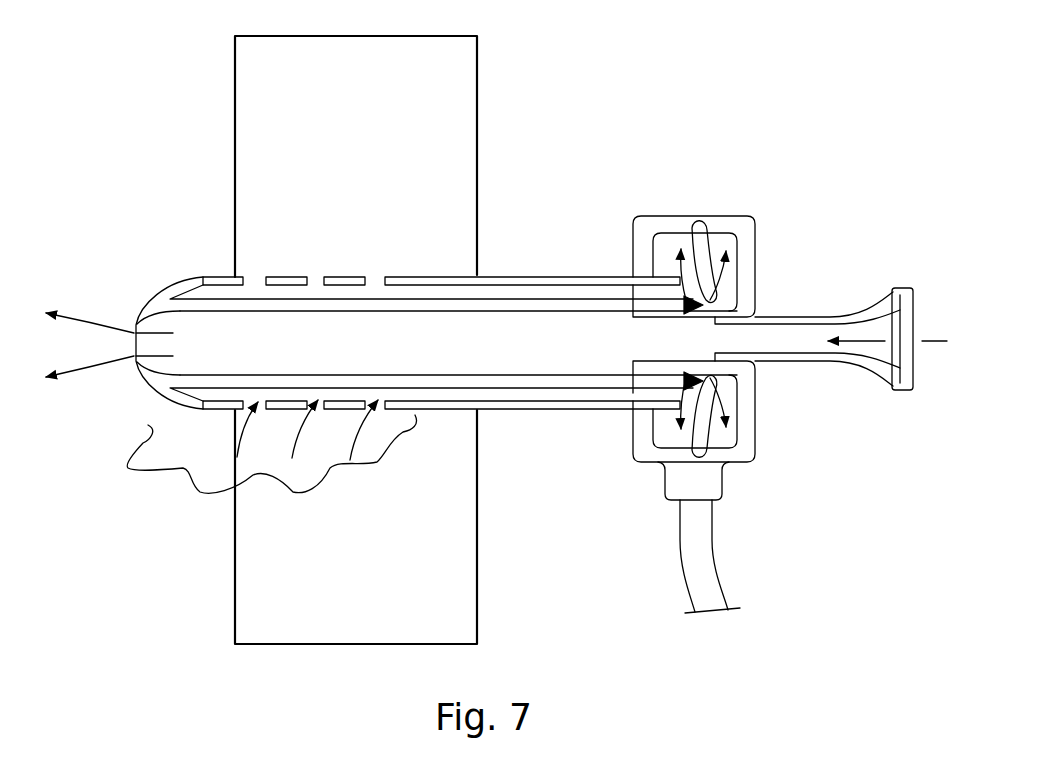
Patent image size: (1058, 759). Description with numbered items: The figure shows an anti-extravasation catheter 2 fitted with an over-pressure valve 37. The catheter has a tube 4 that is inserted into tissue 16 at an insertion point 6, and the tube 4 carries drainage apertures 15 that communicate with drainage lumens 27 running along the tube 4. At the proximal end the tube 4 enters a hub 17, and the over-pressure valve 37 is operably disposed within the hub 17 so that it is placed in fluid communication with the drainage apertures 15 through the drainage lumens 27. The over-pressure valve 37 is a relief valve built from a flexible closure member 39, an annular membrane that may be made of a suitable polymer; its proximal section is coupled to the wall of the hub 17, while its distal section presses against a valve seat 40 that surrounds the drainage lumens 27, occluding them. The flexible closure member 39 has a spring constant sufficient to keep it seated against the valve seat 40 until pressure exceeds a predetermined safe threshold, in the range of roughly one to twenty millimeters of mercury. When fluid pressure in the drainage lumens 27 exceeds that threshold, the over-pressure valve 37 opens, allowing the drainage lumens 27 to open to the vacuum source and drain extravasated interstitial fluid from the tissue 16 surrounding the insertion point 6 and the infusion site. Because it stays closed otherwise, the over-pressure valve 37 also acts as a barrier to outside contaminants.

The anti-extravasation catheter 2 is at (627, 119).
The tube 4 is at (458, 412).
The insertion point 6 is at (498, 423).
The drainage apertures 15 is at (316, 266).
The tissue 16 is at (348, 119).
The hub 17 is at (755, 233).
The drainage lumens 27 is at (448, 290).
The over-pressure valve 37 is at (693, 208).
The flexible closure member 39 is at (697, 248).
The valve seat 40 is at (690, 293).